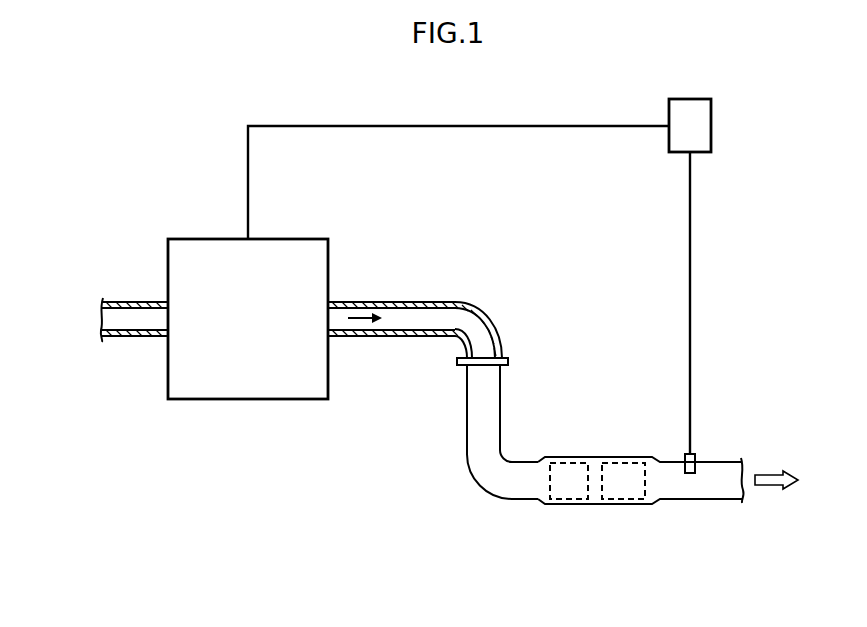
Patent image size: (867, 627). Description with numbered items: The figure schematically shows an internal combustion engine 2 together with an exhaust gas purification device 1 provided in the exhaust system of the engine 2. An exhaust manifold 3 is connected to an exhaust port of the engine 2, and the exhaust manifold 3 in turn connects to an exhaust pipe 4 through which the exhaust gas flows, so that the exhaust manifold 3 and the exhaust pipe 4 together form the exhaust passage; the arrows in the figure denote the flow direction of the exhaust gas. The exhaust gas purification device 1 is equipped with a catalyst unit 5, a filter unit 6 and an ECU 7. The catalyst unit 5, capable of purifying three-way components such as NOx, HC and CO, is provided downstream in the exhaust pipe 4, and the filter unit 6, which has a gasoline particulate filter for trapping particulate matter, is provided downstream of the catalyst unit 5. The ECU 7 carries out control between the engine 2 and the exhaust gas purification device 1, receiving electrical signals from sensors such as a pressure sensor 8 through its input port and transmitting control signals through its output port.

The exhaust gas purification device 1 is at (641, 483).
The internal combustion engine 2 is at (307, 229).
The exhaust manifold 3 is at (421, 300).
The exhaust pipe 4 is at (467, 408).
The catalyst unit 5 is at (573, 462).
The filter unit 6 is at (625, 462).
The ECU 7 is at (711, 116).
The pressure sensor 8 is at (690, 473).